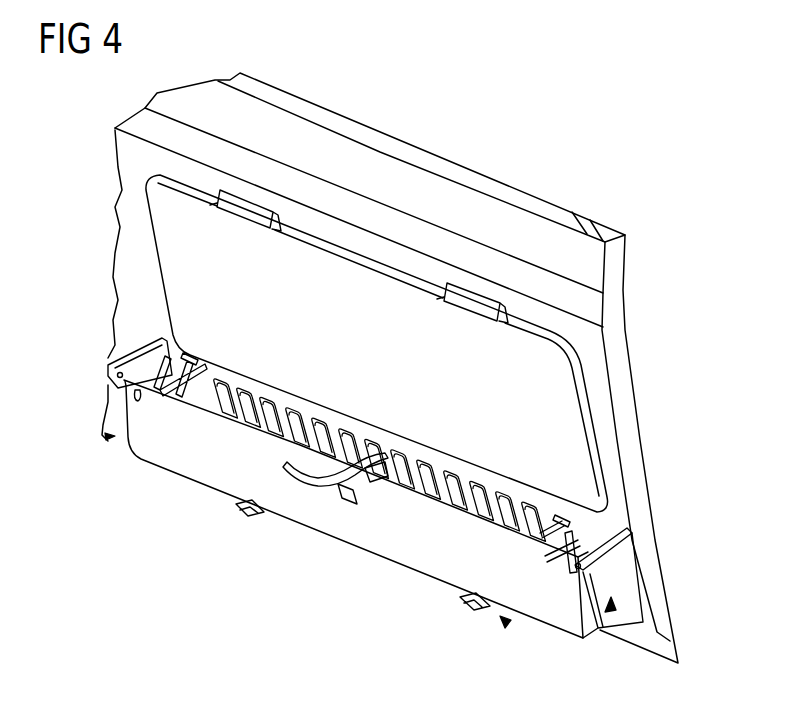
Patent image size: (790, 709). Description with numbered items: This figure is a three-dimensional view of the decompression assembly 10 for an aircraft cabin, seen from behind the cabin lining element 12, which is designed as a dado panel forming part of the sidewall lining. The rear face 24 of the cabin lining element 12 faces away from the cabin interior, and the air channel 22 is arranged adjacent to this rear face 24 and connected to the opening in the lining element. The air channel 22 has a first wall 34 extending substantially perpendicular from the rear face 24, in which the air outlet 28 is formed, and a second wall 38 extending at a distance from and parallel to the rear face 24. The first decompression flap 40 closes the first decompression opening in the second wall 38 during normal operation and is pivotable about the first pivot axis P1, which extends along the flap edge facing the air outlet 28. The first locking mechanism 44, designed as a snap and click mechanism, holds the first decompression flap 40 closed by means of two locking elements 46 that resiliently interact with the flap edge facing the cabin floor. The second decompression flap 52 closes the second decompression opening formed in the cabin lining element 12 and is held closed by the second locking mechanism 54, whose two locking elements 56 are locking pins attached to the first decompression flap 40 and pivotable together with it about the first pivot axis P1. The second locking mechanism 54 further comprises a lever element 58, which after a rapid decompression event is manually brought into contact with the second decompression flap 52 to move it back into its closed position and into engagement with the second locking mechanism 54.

The decompression assembly 10 is at (662, 166).
The cabin lining element 12 is at (407, 166).
The air channel 22 is at (609, 620).
The rear face 24 is at (475, 195).
The air outlet 28 is at (600, 523).
The first wall 34 is at (153, 350).
The second wall 38 is at (107, 438).
The first decompression flap 40 is at (185, 473).
The first locking mechanism 44 is at (513, 629).
The locking element 46 is at (240, 512).
The second decompression flap 52 is at (567, 380).
The second locking mechanism 54 is at (605, 497).
The locking element 56 is at (197, 357).
The lever element 58 is at (298, 476).
The first pivot axis P1 is at (590, 568).